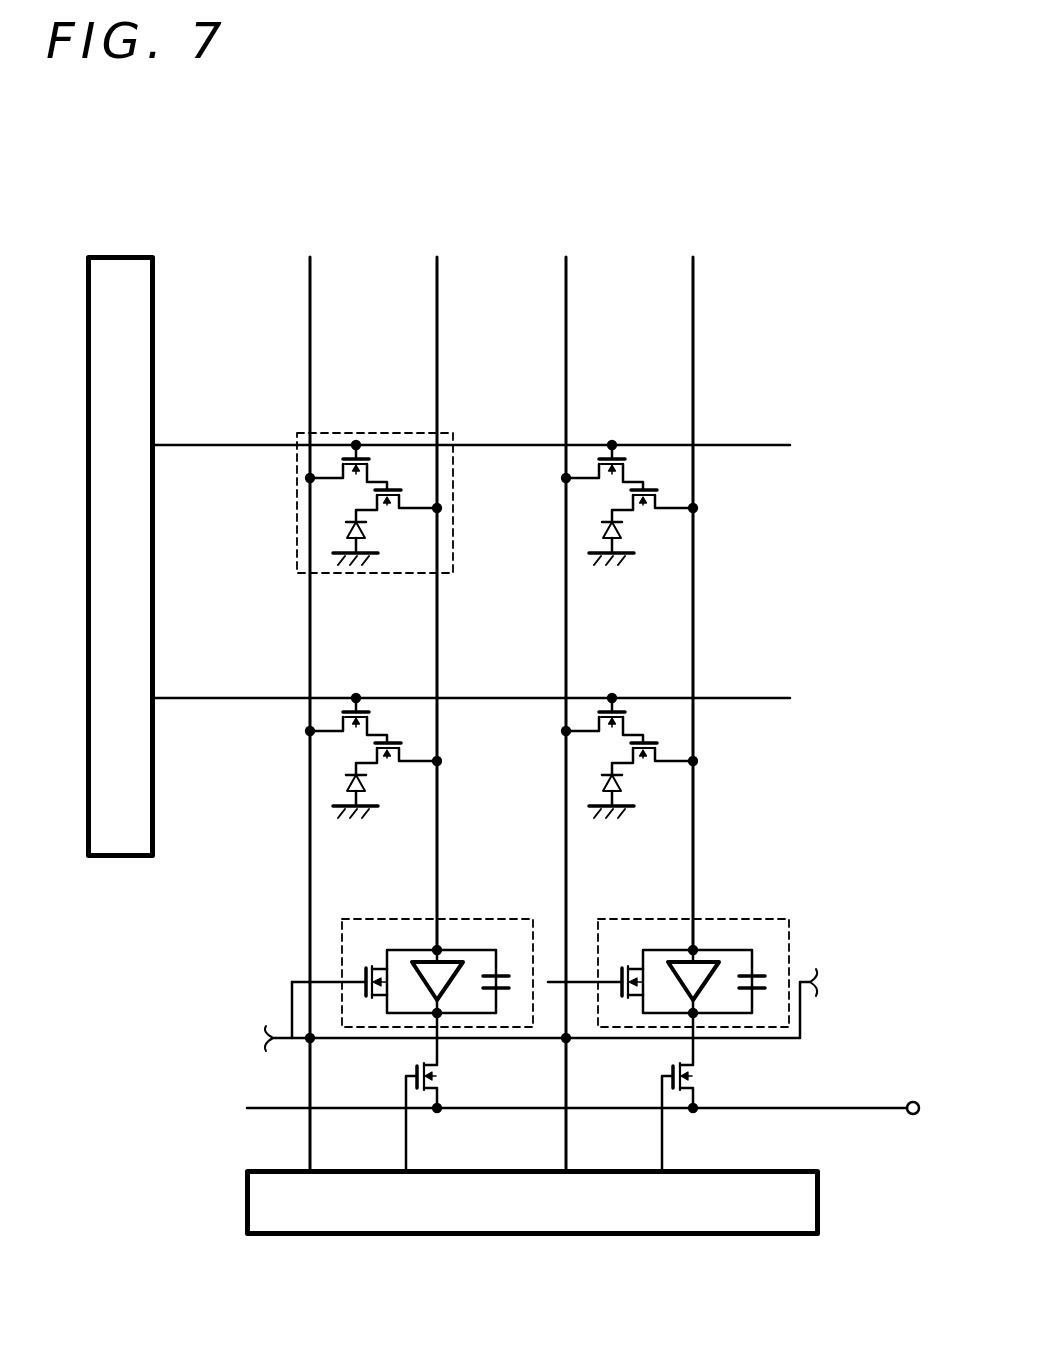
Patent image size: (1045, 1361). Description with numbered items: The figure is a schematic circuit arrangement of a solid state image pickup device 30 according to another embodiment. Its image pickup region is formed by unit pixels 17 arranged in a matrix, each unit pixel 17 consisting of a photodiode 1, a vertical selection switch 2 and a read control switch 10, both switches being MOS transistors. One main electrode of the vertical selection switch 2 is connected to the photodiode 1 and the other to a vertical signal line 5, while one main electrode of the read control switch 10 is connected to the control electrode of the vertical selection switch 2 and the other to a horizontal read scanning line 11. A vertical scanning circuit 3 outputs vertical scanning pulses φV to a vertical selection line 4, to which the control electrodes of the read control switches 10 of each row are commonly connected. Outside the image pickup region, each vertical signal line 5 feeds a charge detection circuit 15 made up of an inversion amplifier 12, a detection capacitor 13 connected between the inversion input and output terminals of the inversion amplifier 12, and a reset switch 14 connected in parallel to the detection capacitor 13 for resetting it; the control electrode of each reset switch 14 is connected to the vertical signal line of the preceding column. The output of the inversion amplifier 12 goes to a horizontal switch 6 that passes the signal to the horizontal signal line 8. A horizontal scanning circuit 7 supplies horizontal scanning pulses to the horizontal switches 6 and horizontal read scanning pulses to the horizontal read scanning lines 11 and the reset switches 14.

The photodiode 1 is at (345, 529).
The vertical selection switch 2 is at (391, 518).
The vertical scanning circuit 3 is at (118, 257).
The vertical selection line 4 is at (275, 445).
The vertical signal line 5 is at (439, 322).
The horizontal switch 6 is at (446, 1075).
The horizontal scanning circuit 7 is at (693, 1237).
The horizontal signal line 8 is at (848, 1107).
The read control switch 10 is at (377, 457).
The horizontal read scanning line 11 is at (311, 322).
The inversion amplifier 12 is at (452, 960).
The detection capacitor 13 is at (500, 967).
The reset switch 14 is at (351, 969).
The charge detection circuit 15 is at (498, 918).
The unit pixel 17 is at (373, 432).
The solid state image pickup device 30 is at (845, 653).